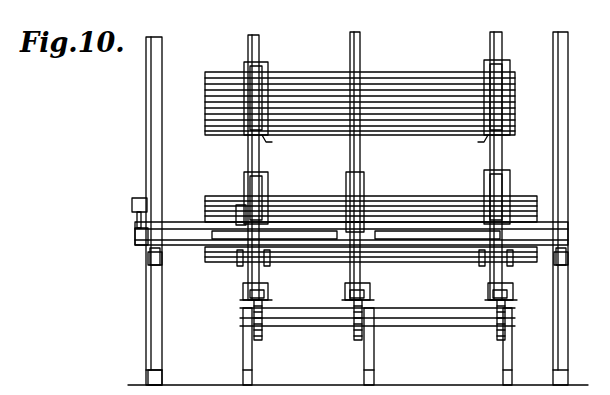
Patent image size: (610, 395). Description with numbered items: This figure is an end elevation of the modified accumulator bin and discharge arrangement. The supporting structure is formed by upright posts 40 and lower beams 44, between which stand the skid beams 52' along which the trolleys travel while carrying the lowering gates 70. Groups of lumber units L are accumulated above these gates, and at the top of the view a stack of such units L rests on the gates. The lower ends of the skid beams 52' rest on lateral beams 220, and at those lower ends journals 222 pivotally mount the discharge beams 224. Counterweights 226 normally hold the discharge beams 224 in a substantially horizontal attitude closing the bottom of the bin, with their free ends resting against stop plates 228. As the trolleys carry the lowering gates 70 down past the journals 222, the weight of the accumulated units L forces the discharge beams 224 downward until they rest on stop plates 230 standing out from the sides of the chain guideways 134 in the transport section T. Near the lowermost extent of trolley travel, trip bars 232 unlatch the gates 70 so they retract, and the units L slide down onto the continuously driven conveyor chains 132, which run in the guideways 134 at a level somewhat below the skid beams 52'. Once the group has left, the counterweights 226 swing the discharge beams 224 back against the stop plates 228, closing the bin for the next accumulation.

The post 40 is at (146, 145).
The lower beam 44 is at (150, 262).
The skid beam 52' is at (357, 166).
The lowering gate 70 is at (268, 138).
The lumber unit L is at (456, 72).
The conveyor chain 132 is at (250, 286).
The chain guideway 134 is at (266, 294).
The lateral beam 220 is at (190, 242).
The journal 222 is at (240, 204).
The discharge beam 224 is at (272, 272).
The counterweight 226 is at (132, 212).
The stop plate 228 is at (360, 228).
The stop plate 230 is at (243, 292).
The trip bar 232 is at (266, 214).
The outfeed transport section T is at (400, 352).